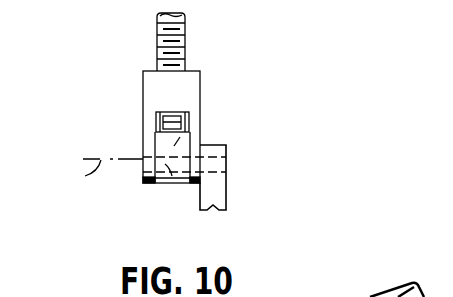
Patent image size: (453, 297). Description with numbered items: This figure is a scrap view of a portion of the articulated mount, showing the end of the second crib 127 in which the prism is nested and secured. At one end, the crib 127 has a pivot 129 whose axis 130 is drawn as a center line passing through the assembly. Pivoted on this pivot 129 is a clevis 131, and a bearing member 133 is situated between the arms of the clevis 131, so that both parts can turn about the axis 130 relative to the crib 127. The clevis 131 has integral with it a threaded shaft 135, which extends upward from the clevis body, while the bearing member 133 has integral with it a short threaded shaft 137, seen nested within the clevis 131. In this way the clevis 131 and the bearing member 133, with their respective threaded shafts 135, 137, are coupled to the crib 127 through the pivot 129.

The second crib 127 is at (217, 189).
The pivot 129 is at (171, 180).
The axis 130 is at (82, 177).
The clevis 131 is at (148, 102).
The bearing member 133 is at (178, 141).
The threaded shaft 135 is at (186, 39).
The short threaded shaft 137 is at (150, 120).